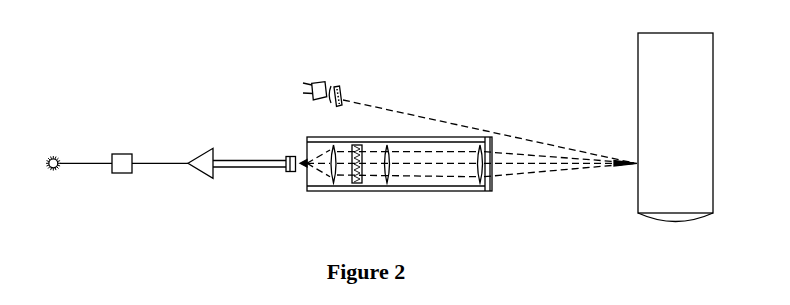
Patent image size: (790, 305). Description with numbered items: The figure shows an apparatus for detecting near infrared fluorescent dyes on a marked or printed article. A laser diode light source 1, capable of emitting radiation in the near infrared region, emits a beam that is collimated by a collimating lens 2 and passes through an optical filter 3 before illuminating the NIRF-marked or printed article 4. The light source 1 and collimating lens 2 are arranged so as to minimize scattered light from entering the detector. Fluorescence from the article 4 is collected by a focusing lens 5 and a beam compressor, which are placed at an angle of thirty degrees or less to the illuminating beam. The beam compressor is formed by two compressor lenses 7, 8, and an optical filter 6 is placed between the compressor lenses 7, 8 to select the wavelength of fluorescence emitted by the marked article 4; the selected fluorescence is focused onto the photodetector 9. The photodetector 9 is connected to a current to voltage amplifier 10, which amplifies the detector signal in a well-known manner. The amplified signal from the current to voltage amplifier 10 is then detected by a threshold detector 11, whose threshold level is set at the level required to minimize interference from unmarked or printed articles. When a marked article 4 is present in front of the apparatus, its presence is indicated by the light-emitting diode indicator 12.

The laser diode light source 1 is at (318, 82).
The collimating lens 2 is at (330, 86).
The optical filter 3 is at (342, 90).
The NIRF-marked or printed article 4 is at (663, 132).
The focusing lens 5 is at (475, 184).
The optical filter 6 is at (366, 184).
The compressor lens 7 is at (388, 184).
The compressor lens 8 is at (338, 184).
The photodetector 9 is at (293, 174).
The current to voltage amplifier 10 is at (210, 150).
The threshold detector 11 is at (127, 153).
The light-emitting diode indicator 12 is at (57, 153).